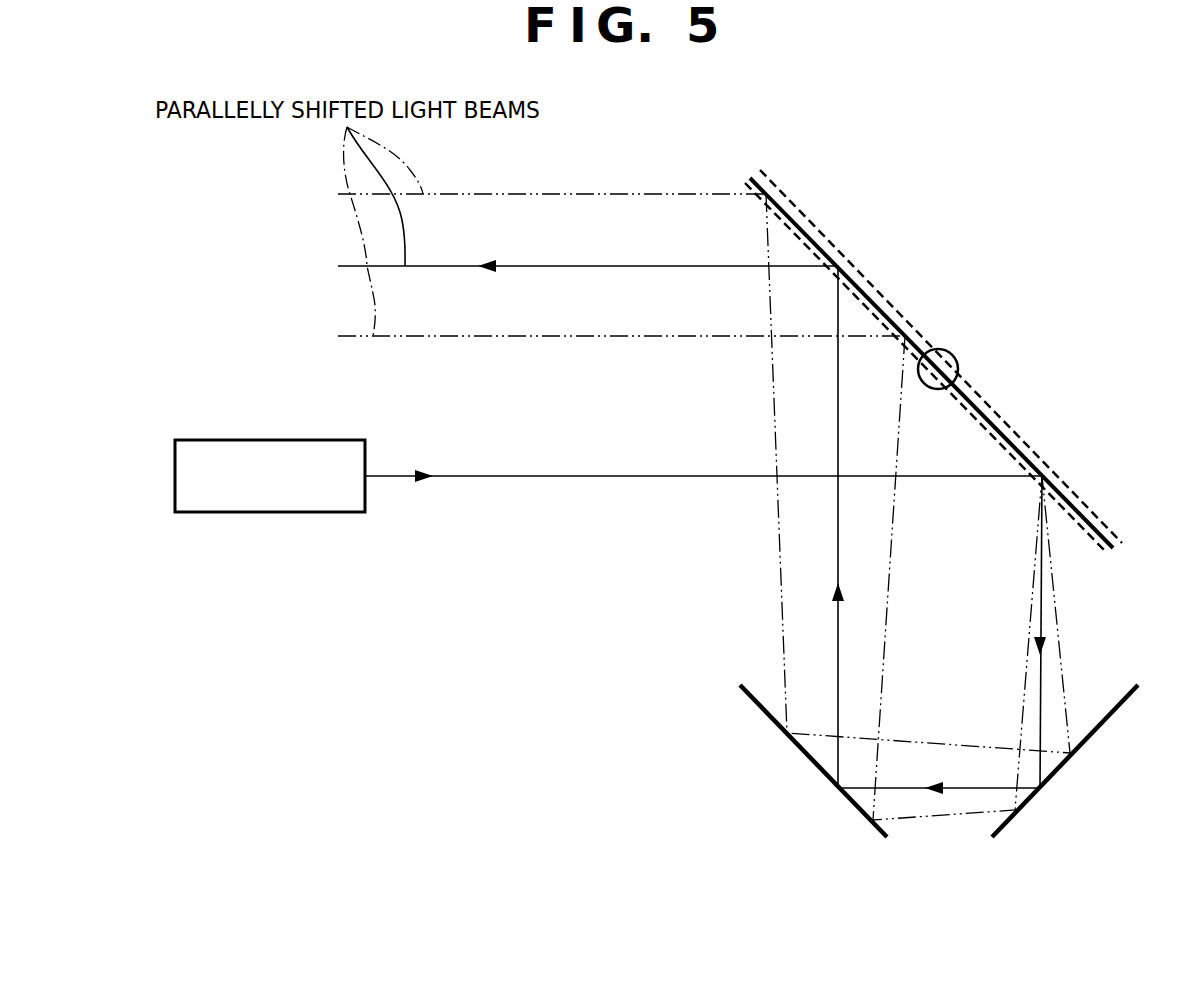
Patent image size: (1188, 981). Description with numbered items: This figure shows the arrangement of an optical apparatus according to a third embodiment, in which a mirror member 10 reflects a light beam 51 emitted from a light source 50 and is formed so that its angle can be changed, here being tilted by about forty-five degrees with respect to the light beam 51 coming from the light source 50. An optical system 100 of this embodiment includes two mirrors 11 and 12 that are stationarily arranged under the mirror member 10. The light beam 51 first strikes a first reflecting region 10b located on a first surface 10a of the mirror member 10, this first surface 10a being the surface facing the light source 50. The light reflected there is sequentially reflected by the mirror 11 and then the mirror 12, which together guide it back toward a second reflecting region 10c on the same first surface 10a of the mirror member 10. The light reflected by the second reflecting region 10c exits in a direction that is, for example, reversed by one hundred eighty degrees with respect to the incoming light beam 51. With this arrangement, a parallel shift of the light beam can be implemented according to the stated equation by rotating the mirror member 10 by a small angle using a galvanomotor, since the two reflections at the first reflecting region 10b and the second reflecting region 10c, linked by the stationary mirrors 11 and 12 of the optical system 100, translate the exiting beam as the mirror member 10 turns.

The mirror member 10 is at (920, 326).
The first surface 10a is at (1104, 553).
The first reflecting region 10b is at (1025, 473).
The second reflecting region 10c is at (843, 283).
The mirror 11 is at (815, 763).
The mirror 12 is at (1093, 732).
The light source 50 is at (320, 440).
The light beam 51 is at (497, 478).
The optical system 100 is at (695, 758).